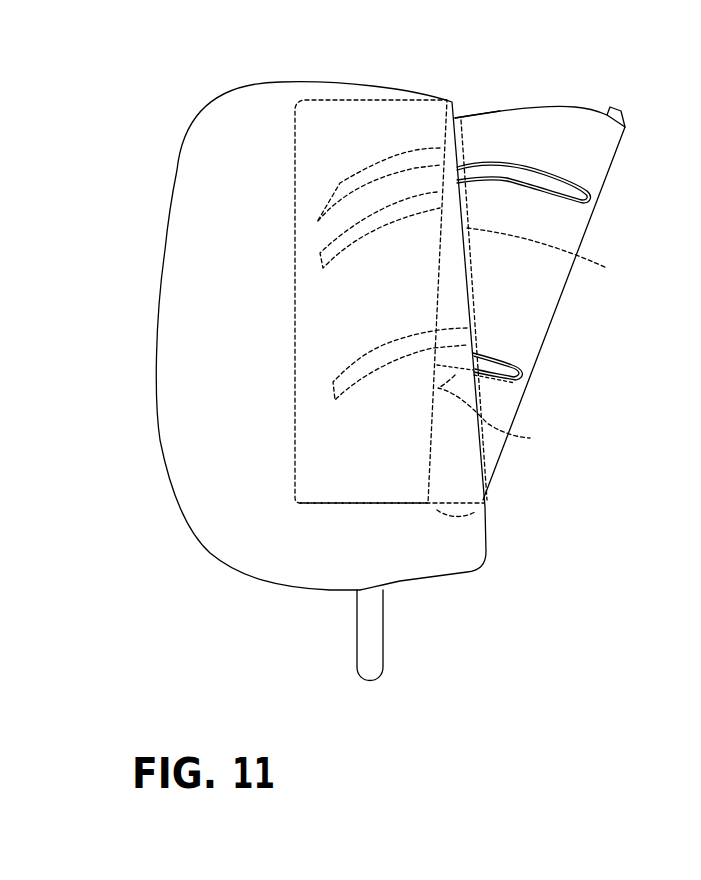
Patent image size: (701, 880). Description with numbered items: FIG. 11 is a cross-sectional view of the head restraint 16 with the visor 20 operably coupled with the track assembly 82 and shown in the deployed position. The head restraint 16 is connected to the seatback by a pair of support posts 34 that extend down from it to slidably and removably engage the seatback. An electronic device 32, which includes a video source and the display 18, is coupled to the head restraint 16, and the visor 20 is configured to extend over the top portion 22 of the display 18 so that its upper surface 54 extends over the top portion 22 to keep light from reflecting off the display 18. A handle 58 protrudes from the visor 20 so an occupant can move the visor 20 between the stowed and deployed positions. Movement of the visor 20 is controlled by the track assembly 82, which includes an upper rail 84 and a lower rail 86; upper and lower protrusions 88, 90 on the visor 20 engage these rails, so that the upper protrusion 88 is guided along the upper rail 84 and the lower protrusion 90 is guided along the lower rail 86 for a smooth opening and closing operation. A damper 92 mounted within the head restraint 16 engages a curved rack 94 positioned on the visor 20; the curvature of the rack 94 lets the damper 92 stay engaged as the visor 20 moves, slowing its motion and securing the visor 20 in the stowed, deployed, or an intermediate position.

The head restraint 16 is at (210, 443).
The display 18 is at (552, 262).
The visor 20 is at (567, 128).
The top portion 22 is at (462, 136).
The electronic device 32 is at (318, 470).
The support posts 34 is at (367, 623).
The upper surface 54 is at (498, 109).
The handle 58 is at (618, 120).
The track assembly 82 is at (320, 208).
The upper rail 84 is at (340, 183).
The lower rail 86 is at (333, 382).
The upper protrusion 88 is at (573, 190).
The lower protrusion 90 is at (517, 364).
The damper 92 is at (500, 415).
The curved rack 94 is at (502, 382).